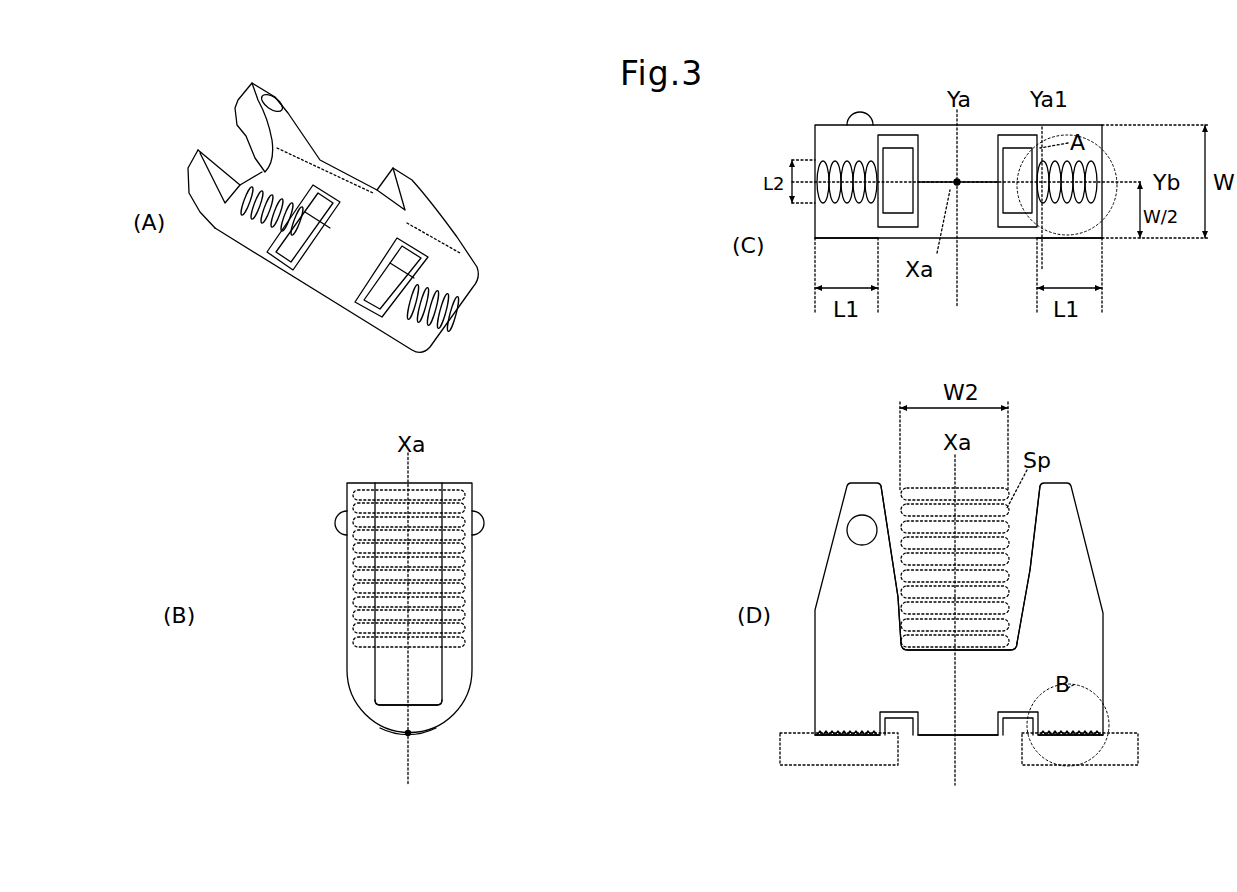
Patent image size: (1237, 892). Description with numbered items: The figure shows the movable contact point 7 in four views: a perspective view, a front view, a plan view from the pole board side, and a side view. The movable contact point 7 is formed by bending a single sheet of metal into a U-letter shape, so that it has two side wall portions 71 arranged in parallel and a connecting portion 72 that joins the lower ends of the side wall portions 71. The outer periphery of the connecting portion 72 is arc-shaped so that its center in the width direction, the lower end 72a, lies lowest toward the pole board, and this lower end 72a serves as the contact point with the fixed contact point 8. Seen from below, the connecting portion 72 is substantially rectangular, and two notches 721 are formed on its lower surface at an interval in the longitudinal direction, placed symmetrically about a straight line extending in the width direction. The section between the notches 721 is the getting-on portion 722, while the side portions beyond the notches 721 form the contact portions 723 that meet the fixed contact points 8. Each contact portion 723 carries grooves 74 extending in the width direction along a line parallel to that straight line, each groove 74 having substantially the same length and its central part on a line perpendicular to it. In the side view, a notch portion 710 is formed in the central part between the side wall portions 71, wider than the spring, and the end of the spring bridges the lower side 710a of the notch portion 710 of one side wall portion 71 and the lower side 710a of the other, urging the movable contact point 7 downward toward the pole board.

The movable contact point 7 is at (437, 168).
The side wall portion 71 is at (218, 170).
The connecting portion 72 is at (350, 390).
The lower end 72a is at (408, 733).
The groove 74 is at (245, 222).
The notch 721 is at (322, 193).
The getting-on portion 722 is at (342, 260).
The contact portion 723 is at (252, 240).
The notch portion 710 is at (1003, 580).
The lower side of notch portion 710a is at (345, 638).
The fixed contact point 8 is at (778, 747).